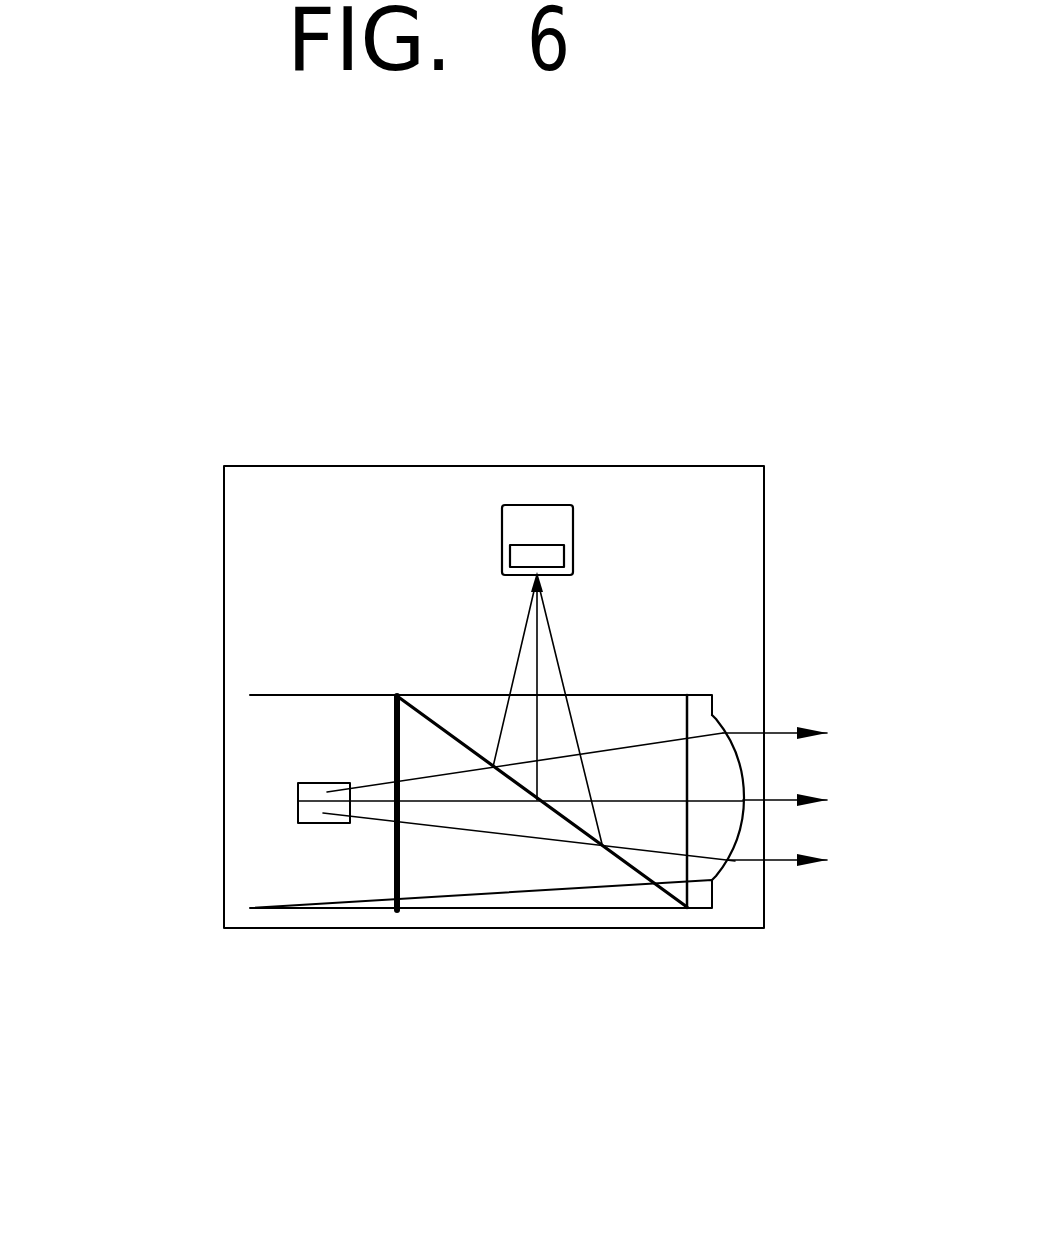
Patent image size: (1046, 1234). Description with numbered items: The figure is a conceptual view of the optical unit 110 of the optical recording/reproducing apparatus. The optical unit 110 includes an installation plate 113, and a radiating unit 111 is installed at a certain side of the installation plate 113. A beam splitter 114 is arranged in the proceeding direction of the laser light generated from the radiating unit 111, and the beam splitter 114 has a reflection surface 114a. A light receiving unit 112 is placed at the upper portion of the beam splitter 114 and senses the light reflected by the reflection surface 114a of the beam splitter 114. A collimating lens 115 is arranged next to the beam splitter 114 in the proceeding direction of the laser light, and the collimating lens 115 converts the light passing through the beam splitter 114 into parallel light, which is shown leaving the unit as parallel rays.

The optical unit 110 is at (202, 433).
The radiating unit 111 is at (298, 812).
The light receiving unit 112 is at (537, 523).
The installation plate 113 is at (242, 527).
The beam splitter 114 is at (476, 880).
The reflection surface 114a is at (623, 858).
The collimating lens 115 is at (715, 835).